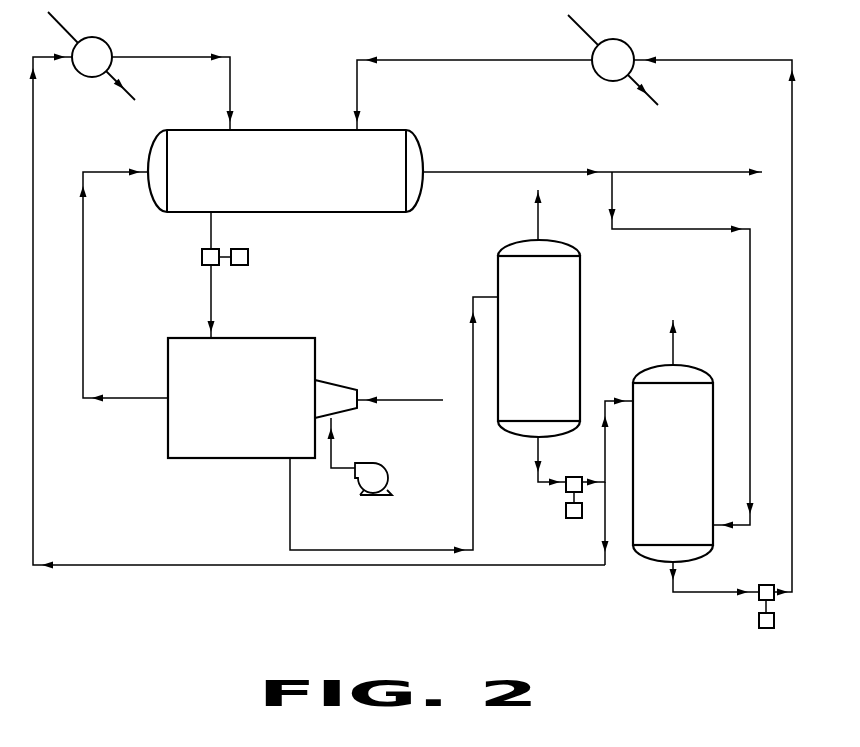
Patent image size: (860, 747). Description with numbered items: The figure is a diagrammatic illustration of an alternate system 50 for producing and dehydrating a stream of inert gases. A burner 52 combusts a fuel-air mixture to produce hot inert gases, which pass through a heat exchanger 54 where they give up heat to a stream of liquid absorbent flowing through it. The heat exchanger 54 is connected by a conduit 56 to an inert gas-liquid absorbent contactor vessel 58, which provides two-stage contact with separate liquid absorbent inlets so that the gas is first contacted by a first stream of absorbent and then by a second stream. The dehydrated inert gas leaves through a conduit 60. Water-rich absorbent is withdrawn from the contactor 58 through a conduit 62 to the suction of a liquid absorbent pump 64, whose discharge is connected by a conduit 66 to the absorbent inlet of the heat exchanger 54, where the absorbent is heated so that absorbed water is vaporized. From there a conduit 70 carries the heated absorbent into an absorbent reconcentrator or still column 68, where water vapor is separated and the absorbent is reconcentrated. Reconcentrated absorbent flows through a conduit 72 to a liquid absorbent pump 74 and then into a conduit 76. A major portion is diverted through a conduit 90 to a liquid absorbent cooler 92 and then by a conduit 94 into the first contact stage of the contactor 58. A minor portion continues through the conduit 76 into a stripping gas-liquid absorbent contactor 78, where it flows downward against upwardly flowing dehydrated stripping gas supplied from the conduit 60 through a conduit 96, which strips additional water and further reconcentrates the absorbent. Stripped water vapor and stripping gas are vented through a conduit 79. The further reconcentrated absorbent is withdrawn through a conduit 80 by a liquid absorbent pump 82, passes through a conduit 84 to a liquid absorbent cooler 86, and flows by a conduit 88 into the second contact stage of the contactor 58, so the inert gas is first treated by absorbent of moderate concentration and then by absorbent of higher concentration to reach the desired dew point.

The system 50 is at (288, 96).
The burner 52 is at (340, 385).
The heat exchanger 54 is at (292, 338).
The conduit 56 is at (83, 288).
The inert gas-liquid absorbent contactor vessel 58 is at (373, 214).
The conduit 60 is at (506, 170).
The conduit 62 is at (212, 232).
The liquid absorbent pump 64 is at (246, 253).
The conduit 66 is at (212, 305).
The absorbent reconcentrator 68 is at (580, 342).
The conduit 70 is at (473, 441).
The conduit 72 is at (538, 454).
The liquid absorbent pump 74 is at (566, 511).
The conduit 76 is at (586, 478).
The stripping gas-liquid absorbent contactor 78 is at (684, 374).
The conduit 79 is at (668, 349).
The conduit 80 is at (670, 566).
The liquid absorbent pump 82 is at (767, 628).
The conduit 84 is at (792, 490).
The liquid absorbent cooler 86 is at (613, 46).
The conduit 88 is at (510, 56).
The conduit 90 is at (212, 569).
The liquid absorbent cooler 92 is at (88, 38).
The conduit 94 is at (165, 66).
The conduit 96 is at (750, 268).